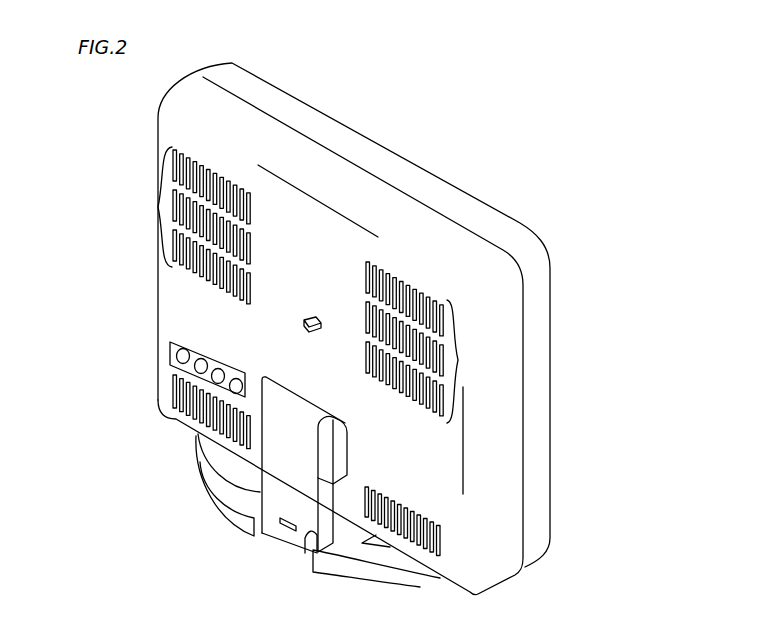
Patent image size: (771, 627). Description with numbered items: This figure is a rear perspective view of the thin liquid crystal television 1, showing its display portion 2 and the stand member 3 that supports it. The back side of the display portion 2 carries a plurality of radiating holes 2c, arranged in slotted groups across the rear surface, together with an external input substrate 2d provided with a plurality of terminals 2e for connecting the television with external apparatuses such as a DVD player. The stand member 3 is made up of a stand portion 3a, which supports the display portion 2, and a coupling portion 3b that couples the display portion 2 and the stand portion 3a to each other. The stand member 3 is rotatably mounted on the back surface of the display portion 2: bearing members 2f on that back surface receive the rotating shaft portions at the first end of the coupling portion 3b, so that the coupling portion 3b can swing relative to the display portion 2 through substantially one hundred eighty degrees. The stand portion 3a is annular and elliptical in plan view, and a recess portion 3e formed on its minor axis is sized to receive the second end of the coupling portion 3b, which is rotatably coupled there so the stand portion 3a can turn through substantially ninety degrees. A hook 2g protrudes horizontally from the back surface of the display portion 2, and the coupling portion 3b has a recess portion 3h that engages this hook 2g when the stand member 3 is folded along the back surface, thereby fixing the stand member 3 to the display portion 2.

The thin liquid crystal television 1 is at (634, 117).
The display portion 2 is at (540, 287).
The radiating holes 2c is at (169, 204).
The external input substrate 2d is at (170, 350).
The terminals 2e is at (238, 381).
The bearing members 2f is at (345, 433).
The hook 2g is at (314, 322).
The stand member 3 is at (216, 513).
The stand portion 3a is at (207, 460).
The coupling portion 3b is at (335, 507).
The recess portion 3e is at (308, 542).
The recess portion 3h is at (291, 532).